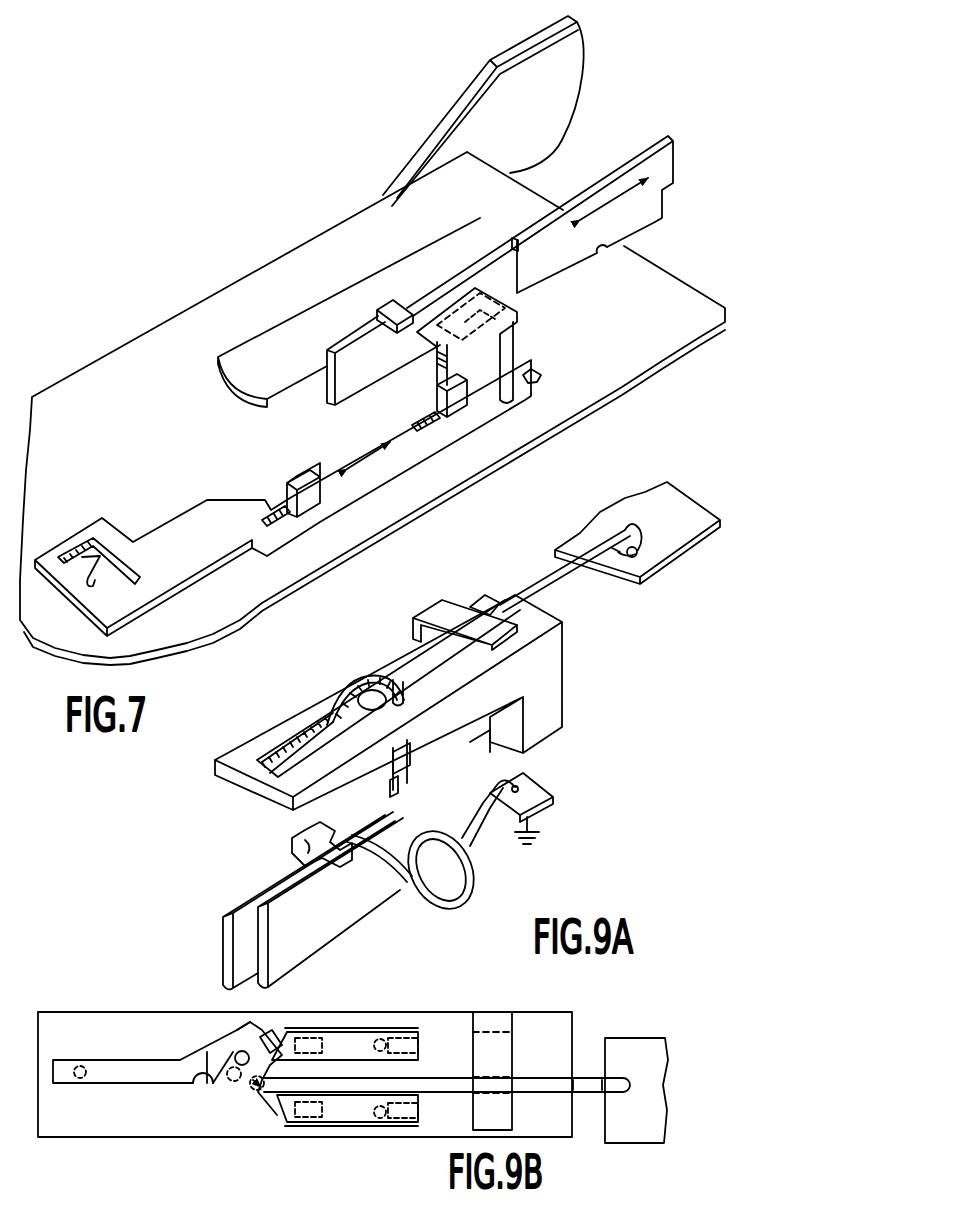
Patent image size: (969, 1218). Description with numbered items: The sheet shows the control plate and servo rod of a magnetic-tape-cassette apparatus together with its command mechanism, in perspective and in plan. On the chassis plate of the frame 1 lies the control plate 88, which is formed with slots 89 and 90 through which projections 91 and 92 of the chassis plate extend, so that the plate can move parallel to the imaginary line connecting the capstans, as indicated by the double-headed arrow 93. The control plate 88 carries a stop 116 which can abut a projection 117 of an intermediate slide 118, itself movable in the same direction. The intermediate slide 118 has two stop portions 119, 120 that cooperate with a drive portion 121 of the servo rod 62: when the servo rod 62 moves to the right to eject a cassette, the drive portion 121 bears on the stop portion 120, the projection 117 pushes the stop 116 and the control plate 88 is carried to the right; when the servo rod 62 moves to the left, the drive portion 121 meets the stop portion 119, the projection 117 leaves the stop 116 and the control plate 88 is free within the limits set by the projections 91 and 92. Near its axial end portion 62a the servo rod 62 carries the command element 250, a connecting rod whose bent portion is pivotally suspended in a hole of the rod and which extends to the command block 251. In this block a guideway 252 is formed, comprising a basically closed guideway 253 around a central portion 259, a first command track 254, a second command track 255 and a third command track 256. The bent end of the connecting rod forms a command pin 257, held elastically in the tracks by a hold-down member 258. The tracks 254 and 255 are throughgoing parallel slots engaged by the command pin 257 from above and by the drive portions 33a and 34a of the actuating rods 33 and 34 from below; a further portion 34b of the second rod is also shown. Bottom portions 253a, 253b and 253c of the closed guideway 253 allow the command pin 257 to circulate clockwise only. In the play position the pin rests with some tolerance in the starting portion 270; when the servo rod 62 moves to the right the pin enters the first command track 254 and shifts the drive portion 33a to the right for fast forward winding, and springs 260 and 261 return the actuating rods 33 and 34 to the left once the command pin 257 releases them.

In FIG. 7, the frame 1 is at (684, 328).
In FIG. 9A, the frame 1 is at (540, 792).
In FIG. 7, the actuating rod 33 is at (523, 43).
In FIG. 9A, the actuating rod 33 is at (308, 920).
In FIG. 9A, the drive portion of actuating rod 33a is at (490, 748).
In FIG. 9B, the drive portion of actuating rod 33a is at (322, 1110).
In FIG. 7, the actuating rod 34 is at (581, 28).
In FIG. 9A, the actuating rod 34 is at (240, 907).
In FIG. 9B, the drive portion of actuating rod 34a is at (322, 1046).
In FIG. 9A, the contact blade portion 34b is at (390, 786).
In FIG. 7, the servo rod 62 is at (279, 337).
In FIG. 9A, the servo rod 62 is at (678, 538).
In FIG. 9B, the servo rod 62 is at (638, 1057).
In FIG. 9A, the axial end portion of servo rod 62a is at (617, 558).
In FIG. 9B, the axial end portion of servo rod 62a is at (604, 1123).
In FIG. 7, the control plate 88 is at (366, 485).
In FIG. 7, the slot 89 is at (430, 430).
In FIG. 7, the slot 90 is at (282, 522).
In FIG. 7, the projection 91 is at (456, 405).
In FIG. 7, the projection 92 is at (316, 506).
In FIG. 7, the double-headed arrow 93 is at (395, 470).
In FIG. 7, the stop 116 is at (530, 378).
In FIG. 7, the projection of intermediate slide 117 is at (509, 397).
In FIG. 7, the intermediate slide 118 is at (565, 252).
In FIG. 7, the stop portion 119 is at (392, 312).
In FIG. 7, the stop portion 120 is at (513, 240).
In FIG. 7, the drive portion of servo rod 121 is at (402, 312).
In FIG. 9A, the command element 250 is at (549, 580).
In FIG. 9B, the command element 250 is at (589, 1083).
In FIG. 9A, the command block 251 is at (549, 665).
In FIG. 9B, the command block 251 is at (539, 1012).
In FIG. 9A, the guideway 252 is at (316, 740).
In FIG. 9B, the guideway 252 is at (152, 1080).
In FIG. 9A, the closed guideway 253 is at (330, 724).
In FIG. 9B, the closed guideway 253 is at (215, 1053).
In FIG. 9B, the bottom portion of guideway 253a is at (203, 1082).
In FIG. 9B, the bottom portion of guideway 253b is at (232, 1005).
In FIG. 9B, the bottom portion of guideway 253c is at (278, 1030).
In FIG. 9B, the first command track 254 is at (365, 1118).
In FIG. 9B, the second command track 255 is at (358, 1030).
In FIG. 9A, the third command track 256 is at (270, 757).
In FIG. 9B, the third command track 256 is at (110, 1060).
In FIG. 9A, the command pin 257 is at (392, 680).
In FIG. 9B, the command pin 257 is at (77, 1066).
In FIG. 9A, the hold-down member 258 is at (445, 610).
In FIG. 9B, the hold-down member 258 is at (490, 1052).
In FIG. 9A, the central portion 259 is at (390, 713).
In FIG. 9A, the spring 260 is at (467, 872).
In FIG. 9A, the spring 261 is at (307, 821).
In FIG. 9B, the starting portion 270 is at (239, 1068).